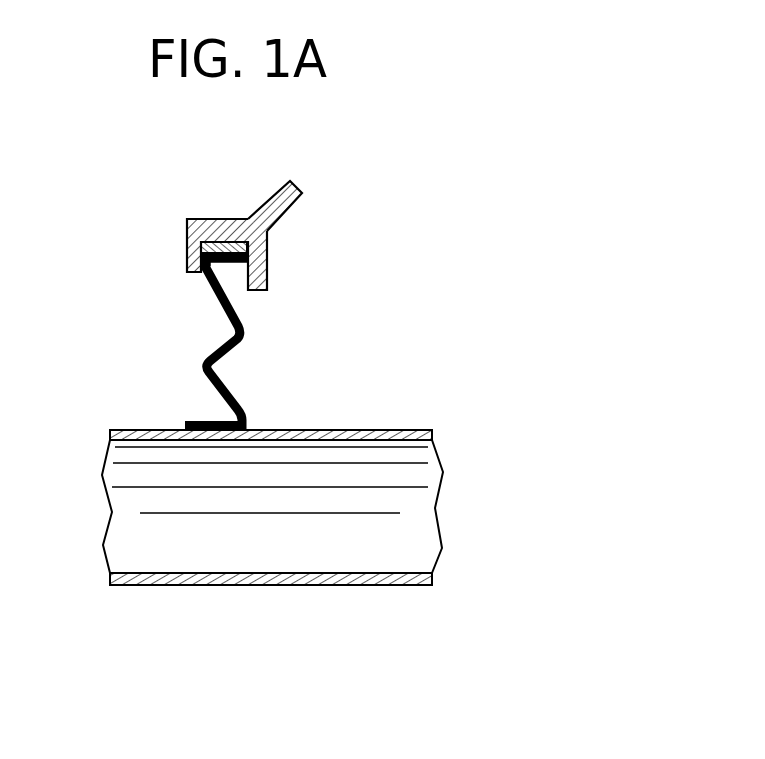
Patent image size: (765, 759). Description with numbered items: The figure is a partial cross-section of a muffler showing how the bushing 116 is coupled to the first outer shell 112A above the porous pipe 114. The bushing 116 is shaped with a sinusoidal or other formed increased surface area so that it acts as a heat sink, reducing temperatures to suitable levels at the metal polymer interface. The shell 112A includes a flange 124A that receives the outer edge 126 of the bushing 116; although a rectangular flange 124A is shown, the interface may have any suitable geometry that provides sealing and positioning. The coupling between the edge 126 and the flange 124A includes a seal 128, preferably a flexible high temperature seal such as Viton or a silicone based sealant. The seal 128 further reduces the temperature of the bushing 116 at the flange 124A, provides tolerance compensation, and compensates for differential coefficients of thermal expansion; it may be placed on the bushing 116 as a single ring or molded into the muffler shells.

The first outer shell 112A is at (292, 202).
The porous pipe 114 is at (143, 430).
The bushing 116 is at (215, 352).
The flange 124A is at (212, 219).
The outer edge 126 is at (230, 265).
The seal 128 is at (190, 271).